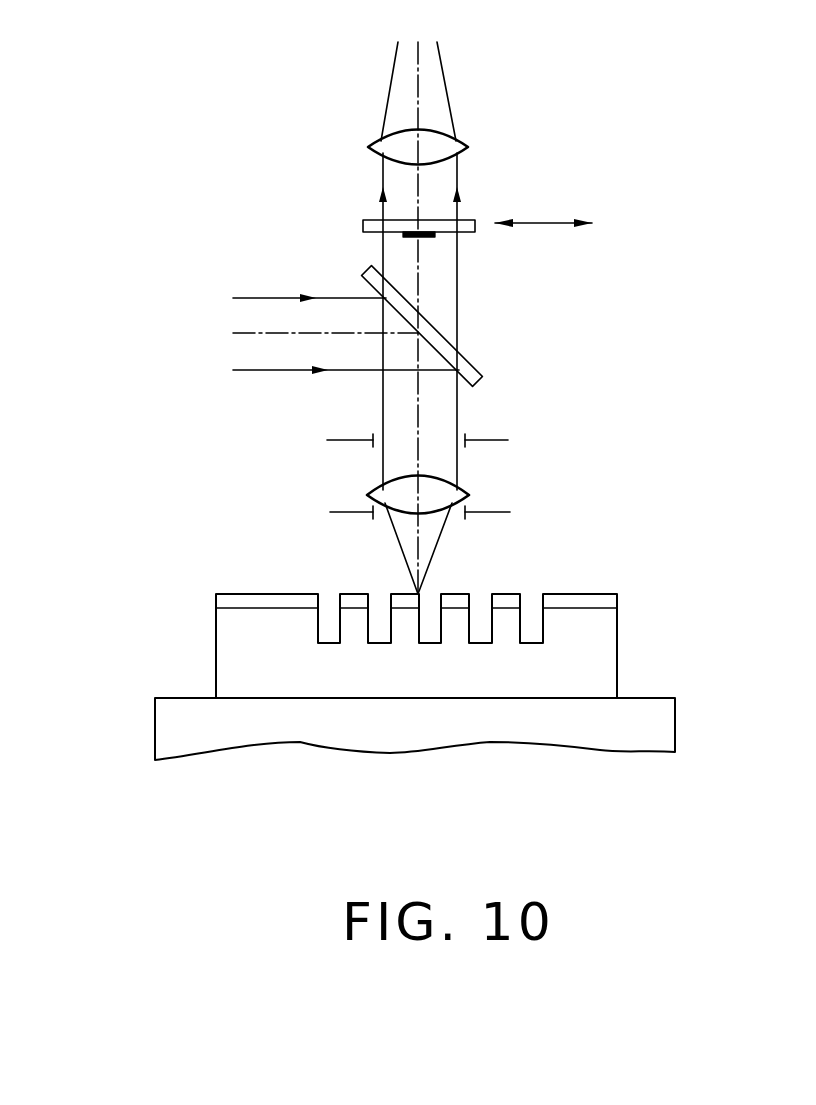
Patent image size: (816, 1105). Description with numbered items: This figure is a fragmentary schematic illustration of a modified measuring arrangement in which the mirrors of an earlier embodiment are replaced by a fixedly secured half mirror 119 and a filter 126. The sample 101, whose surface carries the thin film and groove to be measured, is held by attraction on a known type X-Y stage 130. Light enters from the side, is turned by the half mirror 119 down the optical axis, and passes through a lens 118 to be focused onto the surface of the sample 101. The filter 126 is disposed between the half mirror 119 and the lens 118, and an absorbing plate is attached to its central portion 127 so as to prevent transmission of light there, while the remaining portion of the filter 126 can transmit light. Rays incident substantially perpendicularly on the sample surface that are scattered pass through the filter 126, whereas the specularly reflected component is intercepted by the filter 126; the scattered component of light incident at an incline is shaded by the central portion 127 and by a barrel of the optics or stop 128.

The lens 118 is at (462, 140).
The filter 126 is at (473, 219).
The central portion of the filter 127 is at (433, 234).
The half mirror 119 is at (478, 366).
The stop 128 is at (346, 437).
The sample 101 is at (618, 628).
The X-Y stage 130 is at (155, 730).